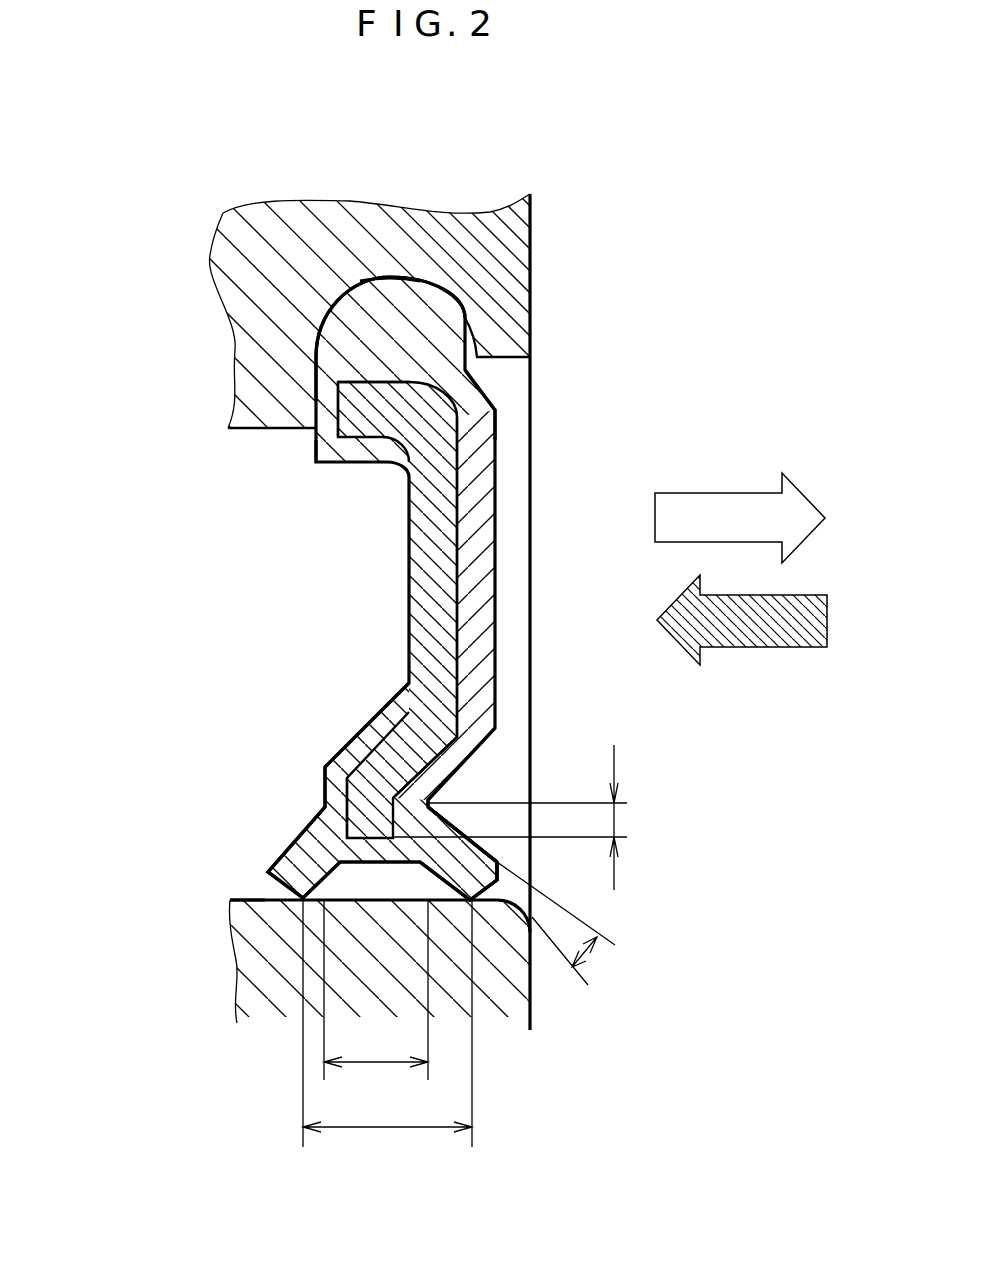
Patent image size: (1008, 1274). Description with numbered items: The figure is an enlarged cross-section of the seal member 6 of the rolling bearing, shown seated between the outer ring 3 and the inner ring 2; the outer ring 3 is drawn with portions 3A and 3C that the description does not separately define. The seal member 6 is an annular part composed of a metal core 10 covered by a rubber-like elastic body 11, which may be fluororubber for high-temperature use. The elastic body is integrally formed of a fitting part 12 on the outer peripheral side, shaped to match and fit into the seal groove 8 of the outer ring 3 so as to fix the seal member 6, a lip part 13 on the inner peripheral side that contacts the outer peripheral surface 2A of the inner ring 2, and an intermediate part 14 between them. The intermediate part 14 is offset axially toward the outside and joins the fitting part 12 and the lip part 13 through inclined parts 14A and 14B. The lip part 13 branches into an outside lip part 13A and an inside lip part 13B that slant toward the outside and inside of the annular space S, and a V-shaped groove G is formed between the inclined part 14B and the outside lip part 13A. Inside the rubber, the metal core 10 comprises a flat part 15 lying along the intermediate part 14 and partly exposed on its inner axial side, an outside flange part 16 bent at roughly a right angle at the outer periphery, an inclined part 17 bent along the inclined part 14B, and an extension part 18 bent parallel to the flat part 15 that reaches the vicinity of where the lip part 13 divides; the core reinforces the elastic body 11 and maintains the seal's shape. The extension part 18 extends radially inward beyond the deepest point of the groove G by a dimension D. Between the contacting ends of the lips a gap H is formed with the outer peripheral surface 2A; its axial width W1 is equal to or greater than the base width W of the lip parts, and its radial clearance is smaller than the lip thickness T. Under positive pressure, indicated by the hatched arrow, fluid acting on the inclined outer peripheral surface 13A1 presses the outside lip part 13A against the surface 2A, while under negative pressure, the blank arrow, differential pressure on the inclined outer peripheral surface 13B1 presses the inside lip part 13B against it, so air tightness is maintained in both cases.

The inner ring 2 is at (520, 987).
The outer peripheral surface 2A is at (262, 898).
The outer ring 3 is at (512, 263).
The housing end face 3A is at (263, 432).
The housing groove corner 3C is at (503, 362).
The seal member 6 is at (402, 300).
The seal groove 8 is at (418, 283).
The metal core 10 is at (435, 473).
The rubber-like elastic body 11 is at (482, 513).
The fitting part 12 is at (356, 315).
The lip part 13 is at (222, 870).
The outside lip part 13A is at (473, 902).
The inclined outer peripheral surface 13A1 is at (518, 867).
The inside lip part 13B is at (288, 848).
The inclined outer peripheral surface 13B1 is at (290, 809).
The intermediate part 14 is at (483, 637).
The inclined part 14A is at (494, 400).
The inclined part 14B is at (467, 745).
The flat part 15 is at (457, 563).
The outside flange part 16 is at (357, 402).
The inclined part 17 is at (395, 727).
The extension part 18 is at (357, 792).
The annular space S is at (268, 465).
The gap H is at (347, 786).
The V-shaped groove G is at (480, 779).
The dimension D is at (522, 817).
The thickness T is at (556, 923).
The width W is at (376, 990).
The width W1 is at (387, 1023).